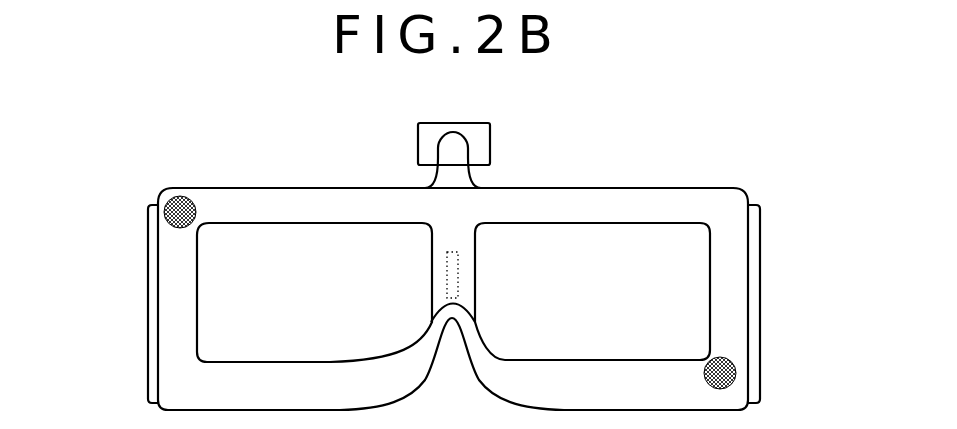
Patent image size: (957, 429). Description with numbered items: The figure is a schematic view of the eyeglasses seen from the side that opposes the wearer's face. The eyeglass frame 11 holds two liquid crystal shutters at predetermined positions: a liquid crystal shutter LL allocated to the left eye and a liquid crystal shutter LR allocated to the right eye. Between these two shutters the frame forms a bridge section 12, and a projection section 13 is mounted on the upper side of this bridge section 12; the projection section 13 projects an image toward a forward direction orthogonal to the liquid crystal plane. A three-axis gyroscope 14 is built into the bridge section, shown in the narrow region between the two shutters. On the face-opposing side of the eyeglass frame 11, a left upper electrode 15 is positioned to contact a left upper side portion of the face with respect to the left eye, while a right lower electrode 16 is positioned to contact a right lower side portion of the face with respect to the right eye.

The eyeglass frame 11 is at (728, 258).
The bridge section 12 is at (455, 222).
The projection section 13 is at (490, 143).
The three-axis gyroscope 14 is at (458, 260).
The left upper electrode 15 is at (181, 196).
The right lower electrode 16 is at (737, 380).
The liquid crystal shutter LL is at (212, 307).
The liquid crystal shutter LR is at (697, 315).